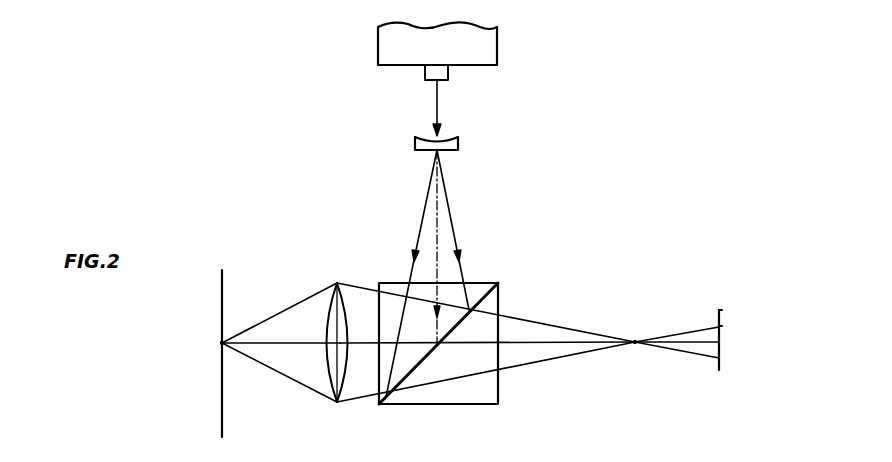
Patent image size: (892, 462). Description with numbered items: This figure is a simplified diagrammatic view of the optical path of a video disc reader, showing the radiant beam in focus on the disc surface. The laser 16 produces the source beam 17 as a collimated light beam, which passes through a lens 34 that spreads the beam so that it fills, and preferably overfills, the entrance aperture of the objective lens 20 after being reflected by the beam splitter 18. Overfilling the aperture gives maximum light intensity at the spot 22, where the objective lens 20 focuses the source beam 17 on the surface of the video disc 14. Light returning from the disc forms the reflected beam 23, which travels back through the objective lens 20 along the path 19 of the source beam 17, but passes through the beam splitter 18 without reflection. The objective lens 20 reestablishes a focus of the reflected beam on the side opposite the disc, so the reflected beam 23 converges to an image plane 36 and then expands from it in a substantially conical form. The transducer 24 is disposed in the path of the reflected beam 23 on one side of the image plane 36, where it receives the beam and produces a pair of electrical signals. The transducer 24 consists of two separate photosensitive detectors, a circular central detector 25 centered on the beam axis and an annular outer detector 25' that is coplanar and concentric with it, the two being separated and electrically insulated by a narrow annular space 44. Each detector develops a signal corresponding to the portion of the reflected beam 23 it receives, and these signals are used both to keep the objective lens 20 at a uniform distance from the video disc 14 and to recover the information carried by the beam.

The video disc 14 is at (222, 416).
The laser 16 is at (498, 38).
The source beam 17 is at (430, 104).
The beam splitter 18 is at (471, 282).
The path 19 is at (276, 342).
The objective lens 20 is at (340, 281).
The spot 22 is at (224, 350).
The reflected beam 23 is at (548, 348).
The transducer 24 is at (710, 360).
The central detector 25 is at (745, 340).
The outer detector 25' is at (749, 305).
The lens 34 is at (459, 141).
The image plane 36 is at (637, 340).
The annular space 44 is at (722, 330).